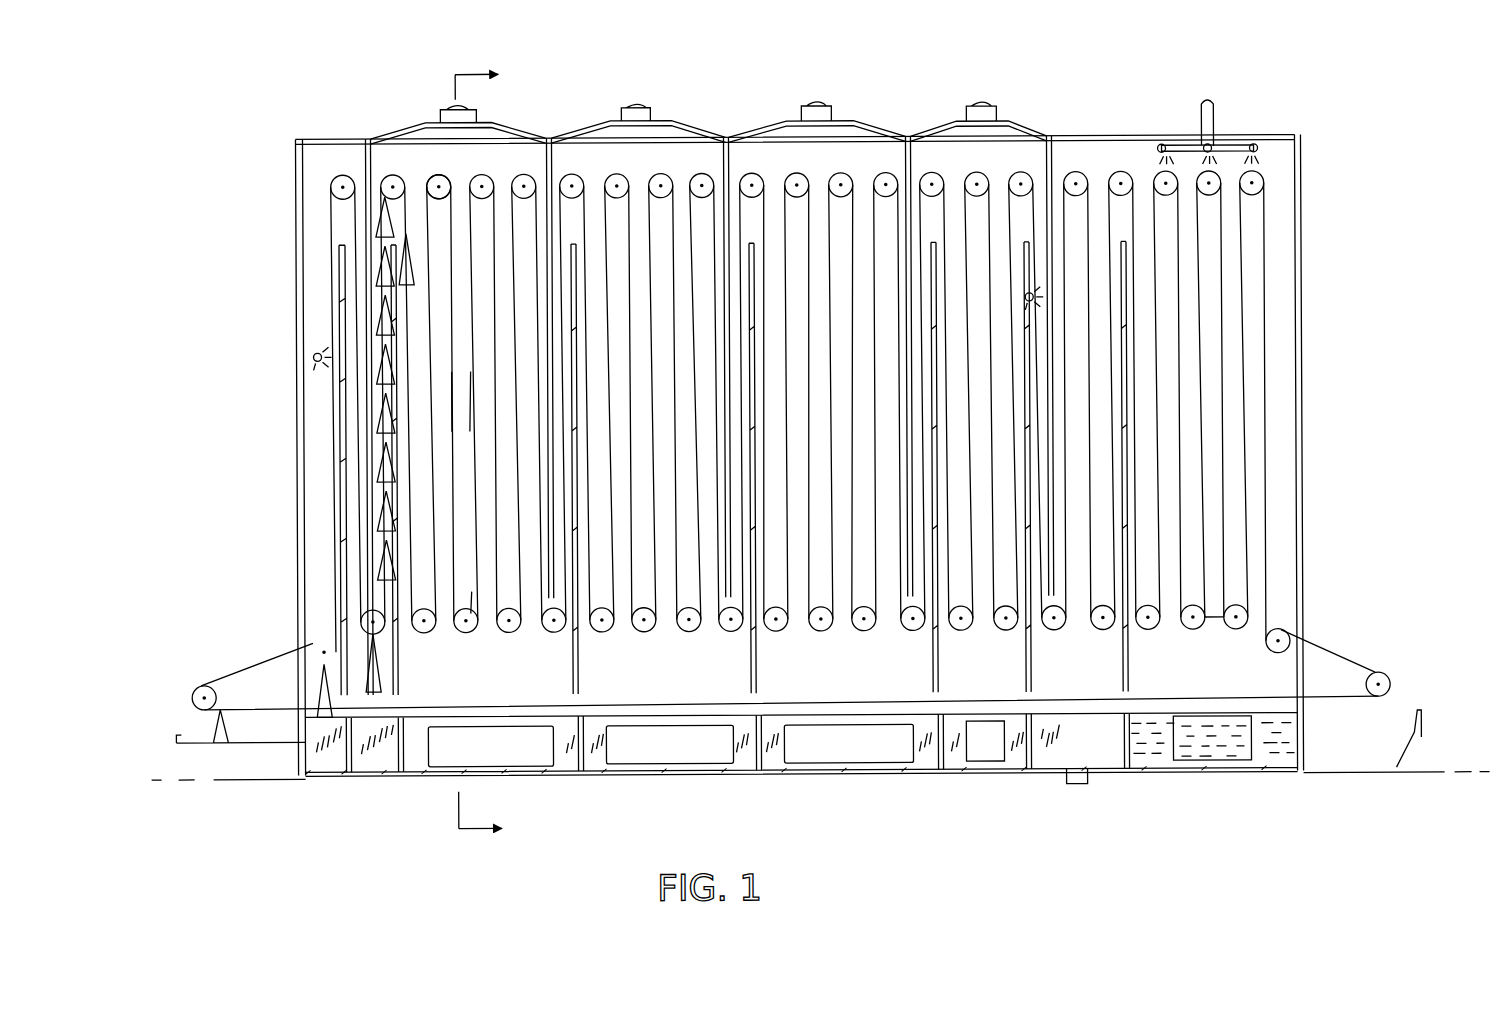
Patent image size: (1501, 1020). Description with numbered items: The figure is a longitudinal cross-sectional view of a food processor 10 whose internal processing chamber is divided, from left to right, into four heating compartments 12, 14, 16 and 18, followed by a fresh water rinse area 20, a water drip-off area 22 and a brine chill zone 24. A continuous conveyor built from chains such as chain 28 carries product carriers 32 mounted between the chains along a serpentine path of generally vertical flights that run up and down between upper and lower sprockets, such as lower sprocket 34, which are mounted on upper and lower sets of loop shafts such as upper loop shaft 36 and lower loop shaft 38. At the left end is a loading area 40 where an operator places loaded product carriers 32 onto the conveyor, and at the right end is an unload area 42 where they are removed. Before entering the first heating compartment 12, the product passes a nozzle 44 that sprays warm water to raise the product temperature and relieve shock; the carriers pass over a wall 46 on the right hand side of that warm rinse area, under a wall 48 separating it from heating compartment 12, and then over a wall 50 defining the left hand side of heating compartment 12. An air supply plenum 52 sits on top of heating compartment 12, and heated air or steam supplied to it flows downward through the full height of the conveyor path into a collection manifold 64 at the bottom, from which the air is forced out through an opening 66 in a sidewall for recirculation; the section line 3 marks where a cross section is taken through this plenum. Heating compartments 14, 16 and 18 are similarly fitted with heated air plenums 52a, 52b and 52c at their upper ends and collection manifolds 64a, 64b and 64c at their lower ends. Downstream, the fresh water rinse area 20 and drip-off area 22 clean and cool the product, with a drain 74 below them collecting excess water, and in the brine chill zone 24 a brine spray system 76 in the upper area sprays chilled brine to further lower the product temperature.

The section line 3- 3 is at (478, 452).
The food processor 10 is at (1368, 345).
The heating compartment 12 is at (497, 680).
The heating compartment 14 is at (681, 662).
The heating compartment 16 is at (865, 662).
The heating compartment 18 is at (998, 664).
The fresh water rinse area 20 is at (1035, 620).
The water drip-off area 22 is at (1085, 487).
The brine chill zone 24 is at (1215, 425).
The chain 28 is at (450, 418).
The product carriers 32 is at (428, 200).
The lower sprocket 34 is at (478, 612).
The upper loop shaft 36 is at (437, 185).
The lower loop shaft 38 is at (463, 620).
The loading area 40 is at (235, 665).
The unload area 42 is at (1345, 642).
The nozzle 44 is at (314, 352).
The wall 46 is at (343, 527).
The wall 48 is at (372, 580).
The wall 50 is at (400, 675).
The air supply plenum 52 is at (500, 112).
The heated air plenum 52a is at (678, 114).
The heated air plenum 52b is at (866, 116).
The heated air plenum 52c is at (1020, 112).
The collection manifold 64 is at (335, 768).
The collection manifold 64a is at (597, 762).
The collection manifold 64b is at (776, 762).
The collection manifold 64c is at (955, 764).
The opening 66 is at (465, 727).
The drain 74 is at (1053, 752).
The brine spray system 76 is at (1238, 138).